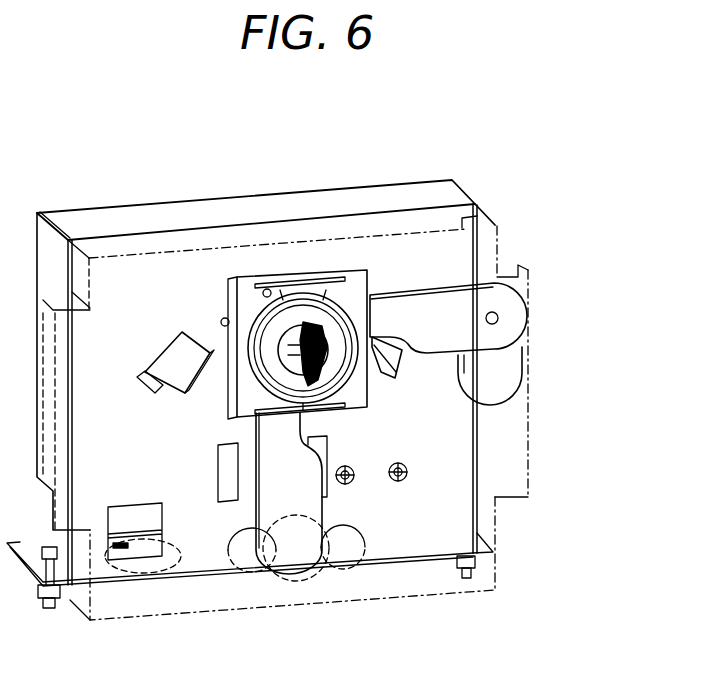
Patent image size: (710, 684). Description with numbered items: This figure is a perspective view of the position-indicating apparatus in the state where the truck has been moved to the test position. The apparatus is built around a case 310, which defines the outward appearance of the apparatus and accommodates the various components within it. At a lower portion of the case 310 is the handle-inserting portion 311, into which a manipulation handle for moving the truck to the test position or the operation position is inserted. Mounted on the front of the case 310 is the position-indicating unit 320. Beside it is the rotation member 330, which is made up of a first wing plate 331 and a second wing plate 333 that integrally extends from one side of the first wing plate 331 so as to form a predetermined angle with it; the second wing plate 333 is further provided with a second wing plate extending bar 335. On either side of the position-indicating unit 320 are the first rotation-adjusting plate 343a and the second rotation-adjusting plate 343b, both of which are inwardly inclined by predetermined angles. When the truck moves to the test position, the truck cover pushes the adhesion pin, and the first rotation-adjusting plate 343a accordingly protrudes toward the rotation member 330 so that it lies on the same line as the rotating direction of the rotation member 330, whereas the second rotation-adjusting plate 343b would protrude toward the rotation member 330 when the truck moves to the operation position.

The case 310 is at (422, 192).
The handle-inserting portion 311 is at (333, 552).
The position-indicating unit 320 is at (312, 338).
The rotation member 330 is at (476, 422).
The first wing plate 331 is at (295, 483).
The second wing plate 333 is at (485, 300).
The second wing plate extending bar 335 is at (503, 362).
The first rotation-adjusting plate 343a is at (182, 360).
The second rotation-adjusting plate 343b is at (397, 336).